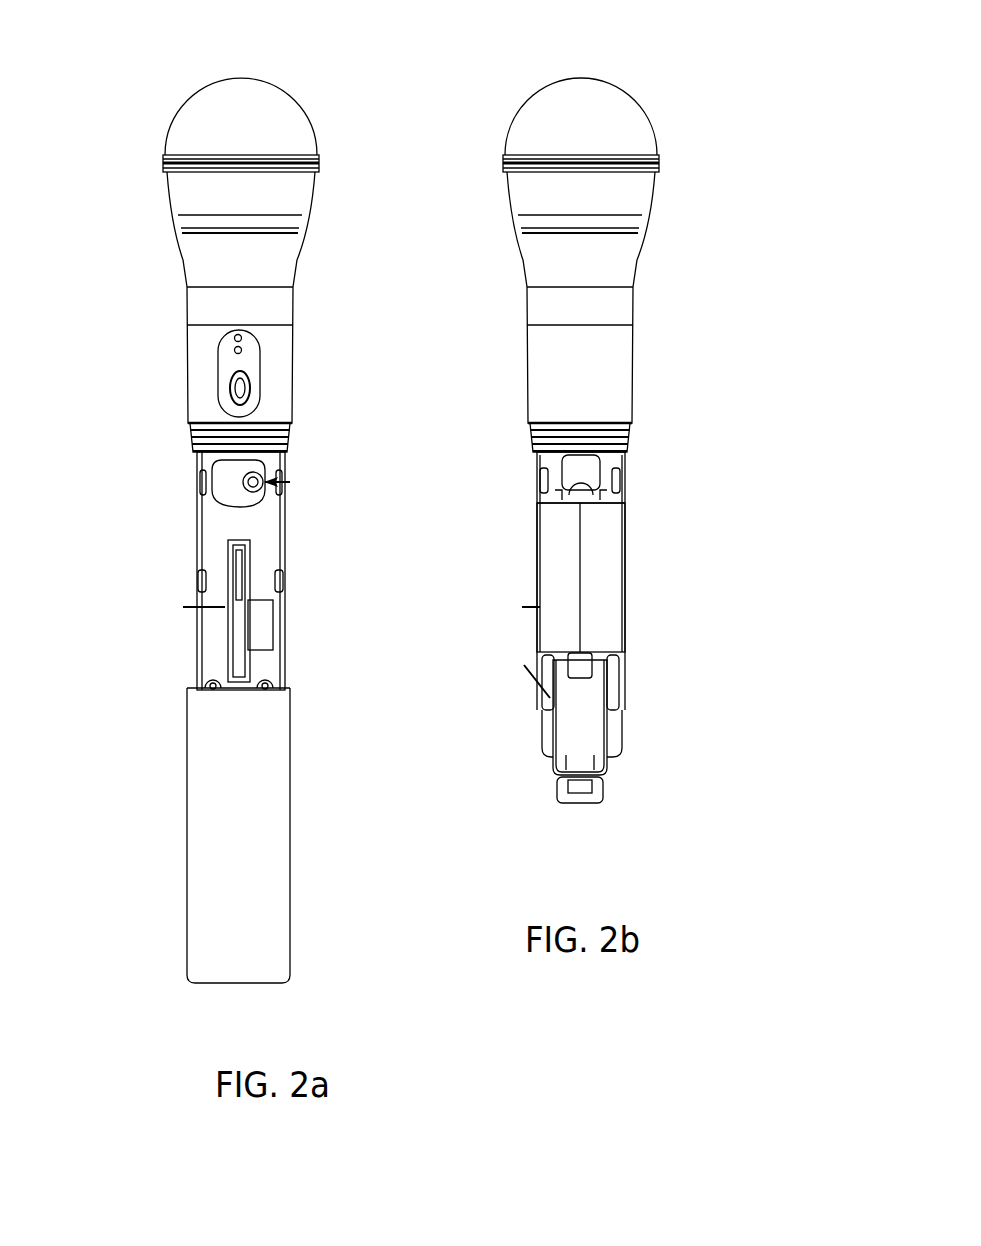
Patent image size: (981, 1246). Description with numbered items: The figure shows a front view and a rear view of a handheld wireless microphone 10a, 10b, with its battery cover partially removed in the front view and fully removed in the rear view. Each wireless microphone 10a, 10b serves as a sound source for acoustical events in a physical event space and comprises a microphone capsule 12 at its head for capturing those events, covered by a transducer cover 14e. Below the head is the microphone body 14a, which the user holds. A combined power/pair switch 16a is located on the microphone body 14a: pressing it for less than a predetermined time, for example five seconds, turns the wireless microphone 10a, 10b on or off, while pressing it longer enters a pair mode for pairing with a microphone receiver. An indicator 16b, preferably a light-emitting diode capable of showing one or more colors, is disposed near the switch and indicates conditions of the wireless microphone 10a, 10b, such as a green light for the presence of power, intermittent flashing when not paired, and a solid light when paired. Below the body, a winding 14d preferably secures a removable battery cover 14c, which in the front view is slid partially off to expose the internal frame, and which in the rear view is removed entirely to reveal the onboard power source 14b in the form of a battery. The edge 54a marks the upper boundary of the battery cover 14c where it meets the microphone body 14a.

In FIG. 2a, the wireless microphone 10a is at (244, 497).
In FIG. 2b, the wireless microphone 10a is at (624, 413).
In FIG. 2a, the wireless microphone 10b is at (244, 497).
In FIG. 2b, the wireless microphone 10b is at (624, 413).
In FIG. 2a, the microphone capsule 12 is at (236, 116).
In FIG. 2a, the microphone body 14a is at (205, 297).
In FIG. 2b, the microphone body 14a is at (690, 400).
In FIG. 2b, the onboard power source 14b is at (570, 576).
In FIG. 2a, the removable battery cover 14c is at (219, 835).
In FIG. 2a, the winding 14d is at (207, 440).
In FIG. 2b, the winding 14d is at (553, 437).
In FIG. 2a, the transducer cover 14e is at (200, 130).
In FIG. 2b, the transducer cover 14e is at (620, 132).
In FIG. 2a, the power/pair switch 16a is at (252, 386).
In FIG. 2a, the indicator 16b is at (238, 332).
In FIG. 2a, the sleeve upper edge 54a is at (294, 733).